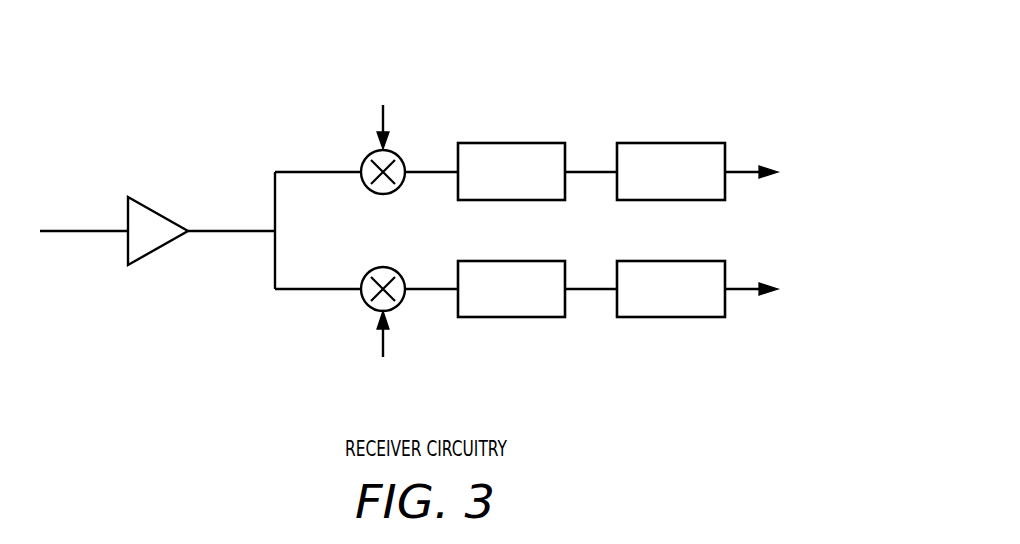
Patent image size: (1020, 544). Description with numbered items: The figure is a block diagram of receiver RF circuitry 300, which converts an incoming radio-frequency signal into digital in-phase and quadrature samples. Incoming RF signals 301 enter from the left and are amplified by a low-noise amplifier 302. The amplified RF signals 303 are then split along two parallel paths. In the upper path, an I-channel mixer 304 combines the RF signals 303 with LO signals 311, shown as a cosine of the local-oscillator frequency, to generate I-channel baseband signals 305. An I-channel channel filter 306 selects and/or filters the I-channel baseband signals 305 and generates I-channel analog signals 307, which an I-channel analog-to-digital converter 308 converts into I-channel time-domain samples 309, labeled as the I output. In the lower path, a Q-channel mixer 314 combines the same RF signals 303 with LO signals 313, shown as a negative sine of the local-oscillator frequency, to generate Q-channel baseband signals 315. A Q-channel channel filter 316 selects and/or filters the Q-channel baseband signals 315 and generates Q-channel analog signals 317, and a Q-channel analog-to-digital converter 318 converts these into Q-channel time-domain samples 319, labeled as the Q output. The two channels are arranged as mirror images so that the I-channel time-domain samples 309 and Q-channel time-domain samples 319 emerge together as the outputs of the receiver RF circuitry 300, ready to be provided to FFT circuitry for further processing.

The receiver RF circuitry 300 is at (163, 87).
The RF signals 301 is at (72, 231).
The low-noise amplifier (LNA) 302 is at (158, 213).
The RF signals 303 is at (276, 212).
The I-channel mixer 304 is at (370, 153).
The I-channel baseband signals 305 is at (433, 175).
The I-channel channel filter 306 is at (548, 143).
The I-channel analog signals 307 is at (592, 175).
The I-channel analog-to-digital converter (ADC) 308 is at (712, 143).
The I-channel time-domain samples 309 is at (743, 175).
The LO signals 311 is at (385, 118).
The LO signals 313 is at (385, 338).
The Q-channel mixer 314 is at (370, 269).
The Q-channel baseband signals 315 is at (433, 280).
The Q-channel channel filter 316 is at (548, 262).
The Q-channel analog signals 317 is at (592, 292).
The Q-channel analog-to-digital converter (ADC) 318 is at (712, 262).
The Q-channel time-domain samples 319 is at (743, 292).